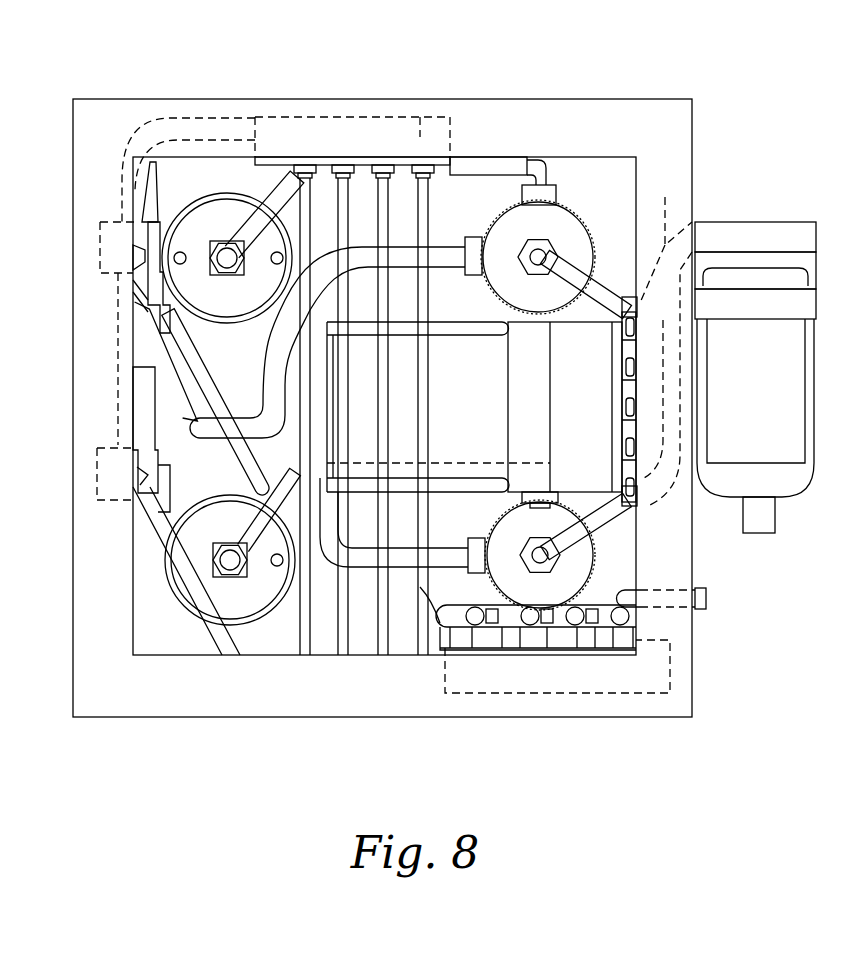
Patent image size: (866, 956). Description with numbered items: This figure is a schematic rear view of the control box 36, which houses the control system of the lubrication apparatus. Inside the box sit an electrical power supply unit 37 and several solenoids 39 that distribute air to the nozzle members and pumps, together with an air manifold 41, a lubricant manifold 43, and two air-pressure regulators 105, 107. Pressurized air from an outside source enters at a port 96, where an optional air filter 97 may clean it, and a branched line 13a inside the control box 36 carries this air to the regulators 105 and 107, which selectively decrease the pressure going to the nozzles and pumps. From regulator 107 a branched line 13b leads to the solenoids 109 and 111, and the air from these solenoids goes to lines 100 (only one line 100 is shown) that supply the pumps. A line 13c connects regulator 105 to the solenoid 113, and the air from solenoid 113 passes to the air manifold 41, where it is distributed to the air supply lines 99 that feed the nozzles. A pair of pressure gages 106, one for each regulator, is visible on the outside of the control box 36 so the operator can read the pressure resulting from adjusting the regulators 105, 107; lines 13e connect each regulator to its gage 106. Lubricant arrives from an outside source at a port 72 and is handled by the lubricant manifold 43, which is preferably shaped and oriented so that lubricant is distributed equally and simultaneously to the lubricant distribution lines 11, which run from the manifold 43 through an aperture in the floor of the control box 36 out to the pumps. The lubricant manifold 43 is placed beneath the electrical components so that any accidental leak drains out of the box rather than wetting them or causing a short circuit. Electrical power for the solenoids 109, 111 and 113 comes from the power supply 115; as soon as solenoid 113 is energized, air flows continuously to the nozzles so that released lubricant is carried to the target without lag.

The control box 36 is at (106, 718).
The air manifold 41 is at (420, 117).
The solenoid 113 is at (153, 232).
The pressure gages 106 is at (223, 213).
The solenoid 111 is at (177, 307).
The solenoids 39 is at (140, 300).
The solenoid 109 is at (140, 455).
The electrical power supply unit 37 is at (332, 432).
The lines 13e is at (485, 162).
The branched line 13b is at (446, 245).
The pressure regulator 107 is at (577, 243).
The branched line 13a is at (666, 339).
The port 96 is at (752, 222).
The air filter 97 is at (793, 440).
The power supply 115 is at (637, 505).
The pressure regulator 105 is at (600, 572).
The port 72 is at (707, 592).
The line 13c is at (440, 558).
The lubricant distribution lines 11 is at (448, 618).
The lubricant manifold 43 is at (628, 676).
The air supply lines 99 is at (428, 645).
The lines 100 is at (217, 630).